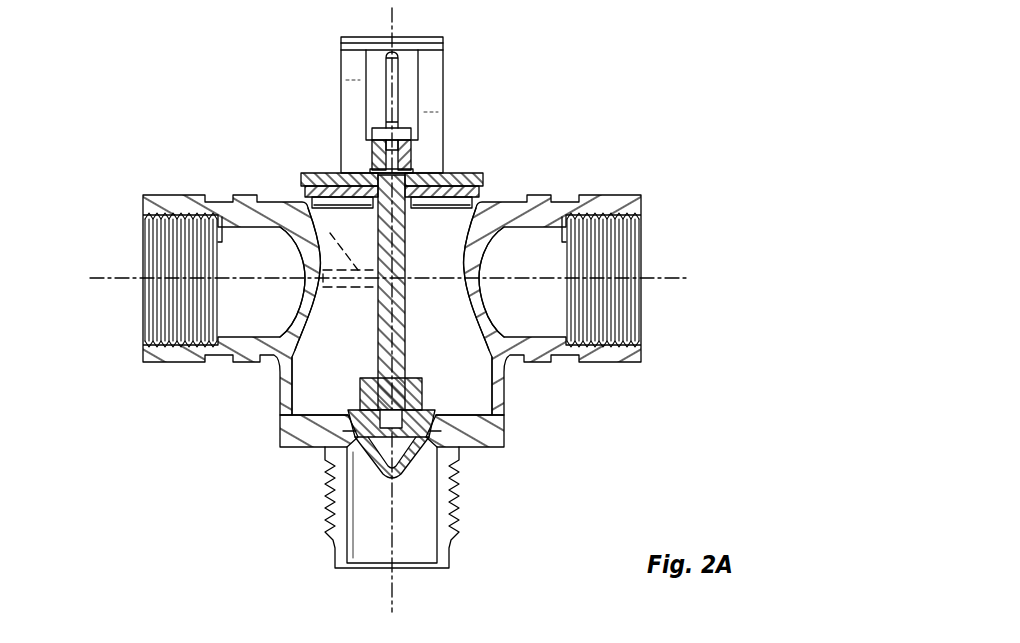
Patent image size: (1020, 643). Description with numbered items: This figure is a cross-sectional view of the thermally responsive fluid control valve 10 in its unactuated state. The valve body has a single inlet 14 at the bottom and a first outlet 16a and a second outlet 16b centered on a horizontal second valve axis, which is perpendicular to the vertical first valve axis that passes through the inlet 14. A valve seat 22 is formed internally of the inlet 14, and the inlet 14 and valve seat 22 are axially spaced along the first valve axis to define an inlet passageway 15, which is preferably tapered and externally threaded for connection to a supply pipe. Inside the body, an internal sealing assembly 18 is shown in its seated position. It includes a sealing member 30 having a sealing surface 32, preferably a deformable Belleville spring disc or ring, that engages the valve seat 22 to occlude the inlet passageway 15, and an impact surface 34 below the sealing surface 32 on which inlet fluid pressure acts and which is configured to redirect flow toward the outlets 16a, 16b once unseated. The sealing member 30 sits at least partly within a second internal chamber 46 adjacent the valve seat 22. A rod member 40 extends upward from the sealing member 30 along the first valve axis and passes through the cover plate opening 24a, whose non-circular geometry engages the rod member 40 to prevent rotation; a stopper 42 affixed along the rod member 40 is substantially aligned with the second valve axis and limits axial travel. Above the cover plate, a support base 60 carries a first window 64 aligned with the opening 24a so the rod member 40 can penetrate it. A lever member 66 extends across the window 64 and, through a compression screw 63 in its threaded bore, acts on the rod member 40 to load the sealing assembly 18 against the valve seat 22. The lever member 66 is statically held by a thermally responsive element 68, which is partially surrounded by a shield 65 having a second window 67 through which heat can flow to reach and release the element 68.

The fluid control valve 10 is at (397, 316).
The inlet 14 is at (420, 575).
The inlet passageway 15 is at (413, 518).
The first outlet 16a is at (643, 299).
The second outlet 16b is at (141, 299).
The internal sealing assembly 18 is at (375, 337).
The valve seat 22 is at (455, 432).
The cover plate opening 24a is at (408, 212).
The sealing member 30 is at (430, 400).
The sealing surface 32 is at (418, 465).
The impact surface 34 is at (432, 440).
The rod member 40 is at (405, 320).
The stopper 42 is at (348, 249).
The second internal chamber 46 is at (340, 395).
The support base 60 is at (320, 172).
The compression screw 63 is at (414, 165).
The first window 64 is at (418, 173).
The shield 65 is at (341, 70).
The lever member 66 is at (372, 153).
The second window 67 is at (418, 80).
The thermally responsive element 68 is at (386, 108).